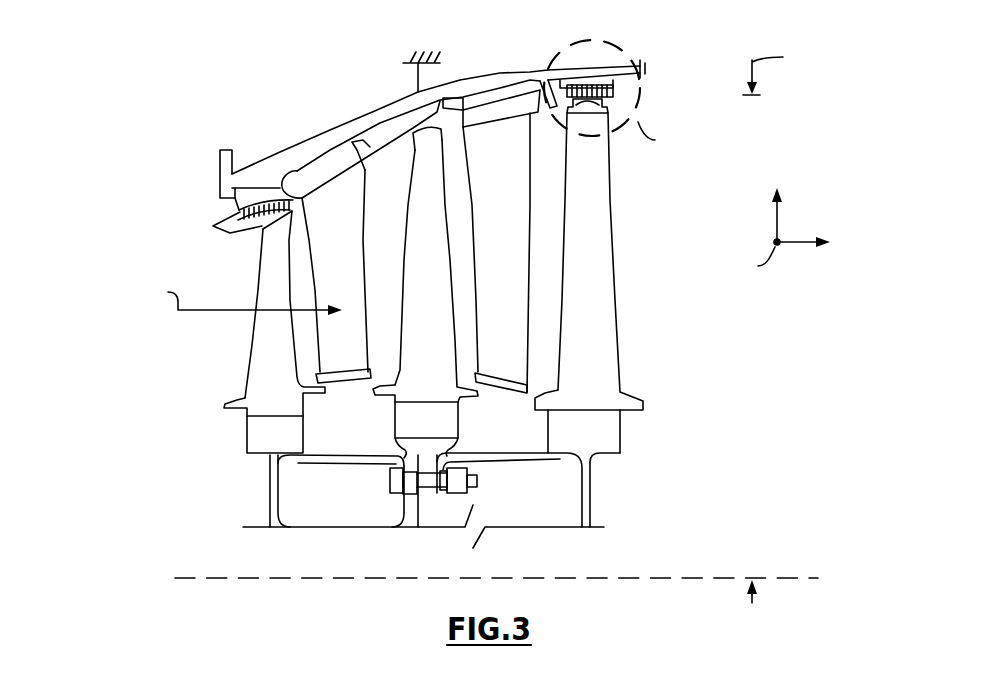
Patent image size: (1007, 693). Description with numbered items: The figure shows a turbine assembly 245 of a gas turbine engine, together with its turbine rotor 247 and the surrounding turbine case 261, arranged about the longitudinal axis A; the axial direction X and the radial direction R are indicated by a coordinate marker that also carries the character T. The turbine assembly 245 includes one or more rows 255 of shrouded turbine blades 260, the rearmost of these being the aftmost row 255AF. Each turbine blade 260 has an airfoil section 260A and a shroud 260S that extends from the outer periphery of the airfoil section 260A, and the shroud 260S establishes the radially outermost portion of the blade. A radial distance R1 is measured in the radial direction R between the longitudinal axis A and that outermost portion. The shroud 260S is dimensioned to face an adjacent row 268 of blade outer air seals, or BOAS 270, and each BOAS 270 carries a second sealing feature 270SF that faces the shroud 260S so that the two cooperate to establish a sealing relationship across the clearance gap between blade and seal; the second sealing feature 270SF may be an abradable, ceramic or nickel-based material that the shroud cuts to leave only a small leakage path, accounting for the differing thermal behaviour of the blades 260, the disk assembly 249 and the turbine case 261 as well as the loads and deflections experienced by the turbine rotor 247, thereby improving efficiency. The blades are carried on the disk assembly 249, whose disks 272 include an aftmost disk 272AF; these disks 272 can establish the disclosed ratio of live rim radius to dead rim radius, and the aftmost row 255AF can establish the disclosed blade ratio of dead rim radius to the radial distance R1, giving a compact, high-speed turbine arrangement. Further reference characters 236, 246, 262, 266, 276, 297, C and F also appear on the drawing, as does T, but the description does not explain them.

The engine static structure 236 is at (418, 50).
The turbine assembly 245 is at (397, 214).
The turbine stage 246 is at (397, 214).
The turbine rotor 247 is at (736, 132).
The disk assembly 249 is at (428, 513).
The row of shrouded turbine blades 255 is at (232, 287).
The aftmost row of turbine blades 255AF is at (634, 188).
The turbine blade 260 is at (441, 265).
The airfoil section 260A is at (645, 220).
The shroud 260S is at (673, 112).
The turbine case 261 is at (491, 72).
The vane platform 262 is at (390, 248).
The inner platform 266 is at (353, 358).
The row of BOAS 268 is at (243, 150).
The BOAS 270 is at (251, 196).
The second sealing feature 270SF is at (615, 90).
The disk 272 is at (283, 515).
The aftmost disk 272AF is at (591, 499).
The disk cavity 276 is at (348, 463).
The seal finger 297 is at (561, 86).
The longitudinal axis A is at (775, 575).
The chord C is at (248, 297).
The fastener F is at (389, 480).
The radial direction R is at (777, 200).
The radial distance R1 is at (777, 69).
The tangential direction T is at (760, 265).
The axial direction X is at (810, 243).